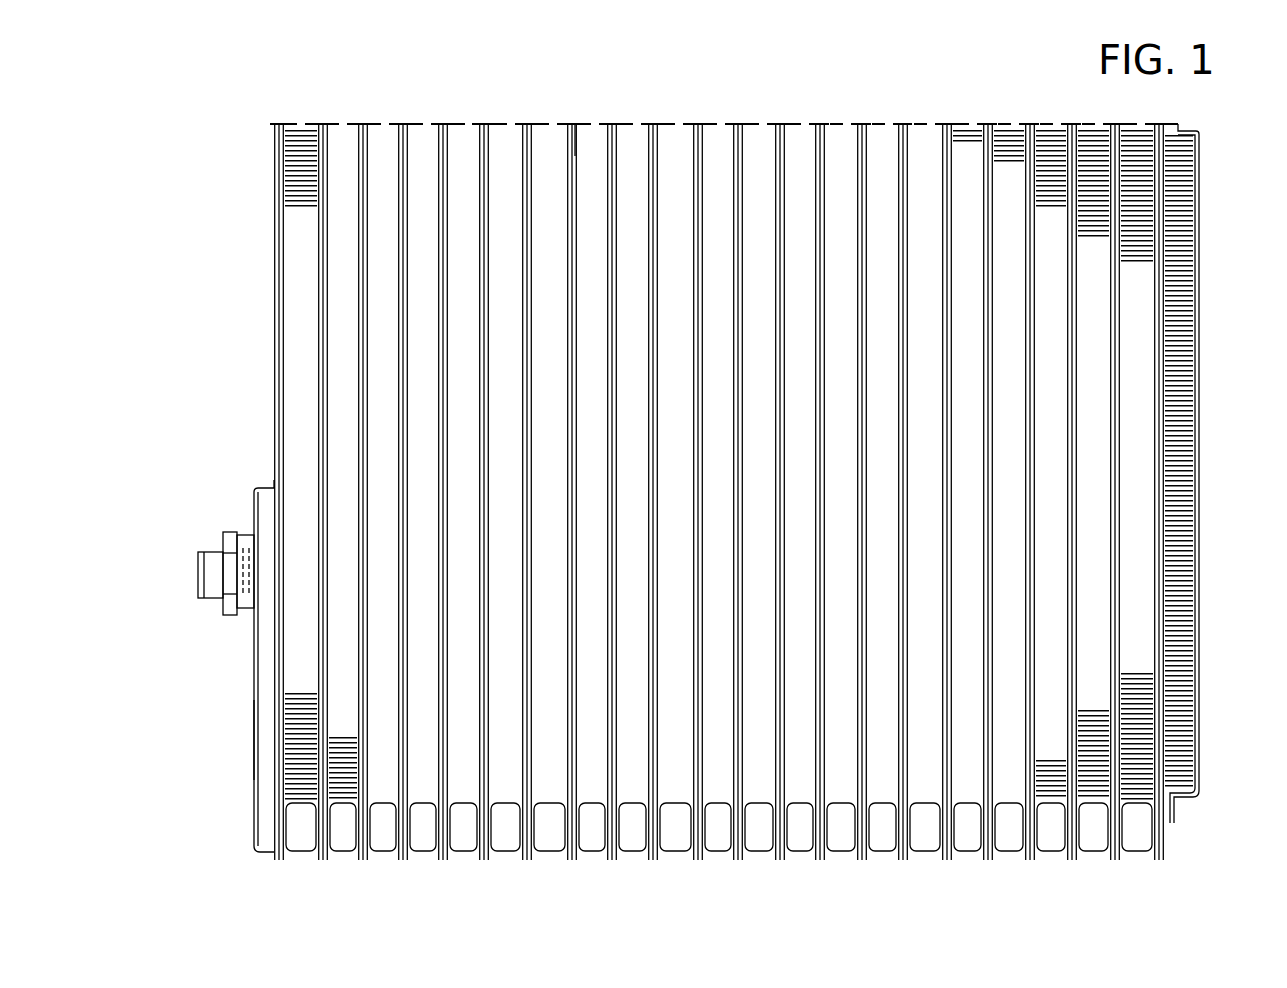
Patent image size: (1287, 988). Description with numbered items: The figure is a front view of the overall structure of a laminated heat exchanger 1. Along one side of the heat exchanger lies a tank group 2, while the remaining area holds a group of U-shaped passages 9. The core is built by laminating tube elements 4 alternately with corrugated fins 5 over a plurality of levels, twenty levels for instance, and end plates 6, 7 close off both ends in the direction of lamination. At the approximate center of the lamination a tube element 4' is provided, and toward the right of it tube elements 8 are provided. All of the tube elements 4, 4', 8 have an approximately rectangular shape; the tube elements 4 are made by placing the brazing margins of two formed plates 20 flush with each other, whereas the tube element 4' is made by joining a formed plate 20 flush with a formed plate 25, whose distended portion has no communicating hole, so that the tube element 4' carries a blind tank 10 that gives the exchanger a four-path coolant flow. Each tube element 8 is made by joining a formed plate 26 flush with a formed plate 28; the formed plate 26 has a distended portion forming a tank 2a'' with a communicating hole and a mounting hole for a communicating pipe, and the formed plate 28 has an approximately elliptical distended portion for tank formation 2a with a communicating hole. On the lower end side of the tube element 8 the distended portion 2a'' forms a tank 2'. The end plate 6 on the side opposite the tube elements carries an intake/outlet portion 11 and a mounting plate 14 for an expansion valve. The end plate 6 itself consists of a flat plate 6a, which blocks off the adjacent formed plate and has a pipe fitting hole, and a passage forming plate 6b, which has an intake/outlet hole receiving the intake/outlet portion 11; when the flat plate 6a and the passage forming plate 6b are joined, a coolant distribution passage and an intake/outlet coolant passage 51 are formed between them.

The laminated heat exchanger 1 is at (1212, 209).
The tank group 2 is at (412, 510).
The tank 2' is at (972, 510).
The distended portion for tank formation 2a is at (681, 850).
The distended portion forming a tank 2a'' is at (906, 850).
The tube element 4 is at (483, 461).
The tube element 4' is at (702, 461).
The corrugated fin 5 is at (294, 186).
The end plate 6 is at (275, 425).
The flat plate 6a is at (280, 860).
The passage forming plate 6b is at (263, 854).
The end plate 7 is at (1200, 425).
The tube element 8 is at (947, 124).
The U-shaped passage 9 is at (575, 124).
The blind tank 10 is at (687, 845).
The intake/outlet portion 11 is at (200, 572).
The mounting plate 14 is at (232, 532).
The formed plate 20 is at (483, 124).
The formed plate 25 is at (697, 124).
The formed plate 26 is at (946, 124).
The formed plate 28 is at (949, 124).
The intake/outlet coolant passage 51 is at (257, 736).